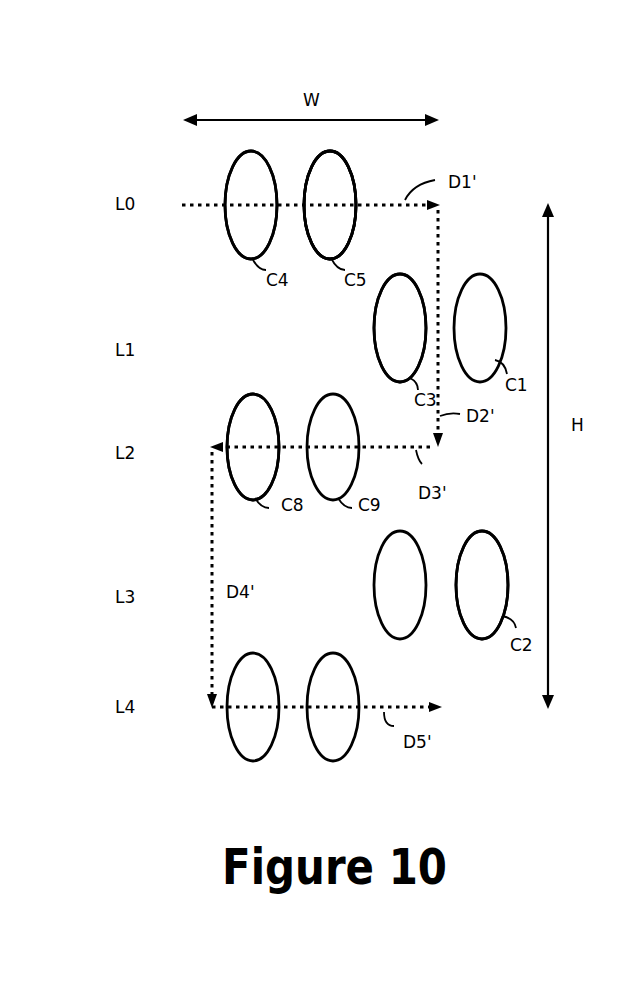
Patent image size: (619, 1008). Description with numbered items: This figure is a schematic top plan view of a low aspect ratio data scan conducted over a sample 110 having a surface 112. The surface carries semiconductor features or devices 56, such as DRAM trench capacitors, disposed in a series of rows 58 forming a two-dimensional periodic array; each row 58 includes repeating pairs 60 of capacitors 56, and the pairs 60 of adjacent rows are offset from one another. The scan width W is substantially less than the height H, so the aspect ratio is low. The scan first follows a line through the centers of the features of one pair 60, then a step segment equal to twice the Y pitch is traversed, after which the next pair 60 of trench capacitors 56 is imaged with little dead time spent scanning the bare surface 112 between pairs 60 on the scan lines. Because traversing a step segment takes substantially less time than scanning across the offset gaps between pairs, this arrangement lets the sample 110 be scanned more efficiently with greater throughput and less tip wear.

The semiconductor features or devices 56 is at (320, 152).
The row 58 is at (157, 170).
The repeating pairs of capacitors 60 is at (362, 164).
The sample 110 is at (476, 93).
The surface 112 is at (455, 668).